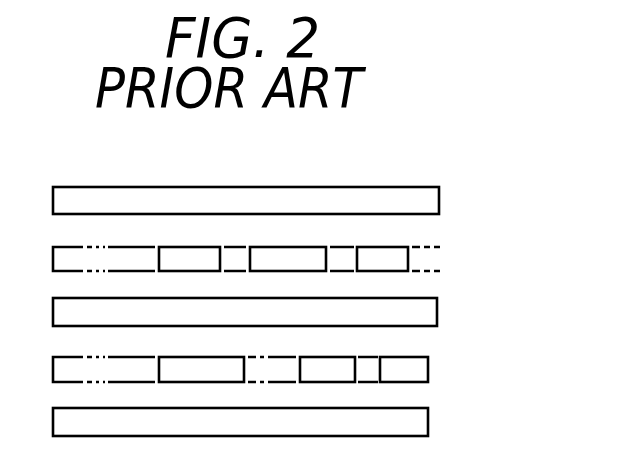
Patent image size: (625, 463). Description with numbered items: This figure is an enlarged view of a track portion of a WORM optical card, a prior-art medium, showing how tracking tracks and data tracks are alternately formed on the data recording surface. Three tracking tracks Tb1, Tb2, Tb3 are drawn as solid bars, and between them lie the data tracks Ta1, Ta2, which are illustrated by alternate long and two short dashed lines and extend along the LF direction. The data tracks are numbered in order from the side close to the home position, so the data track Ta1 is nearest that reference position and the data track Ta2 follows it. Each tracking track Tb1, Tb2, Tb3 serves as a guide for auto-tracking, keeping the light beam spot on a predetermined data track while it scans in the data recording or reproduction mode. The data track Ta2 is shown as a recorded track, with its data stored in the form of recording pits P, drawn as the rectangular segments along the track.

The recording pits P is at (367, 247).
The tracking track Tb3 is at (425, 201).
The data track Ta2 is at (290, 205).
The tracking track Tb2 is at (425, 312).
The data track Ta1 is at (428, 370).
The tracking track Tb1 is at (428, 420).